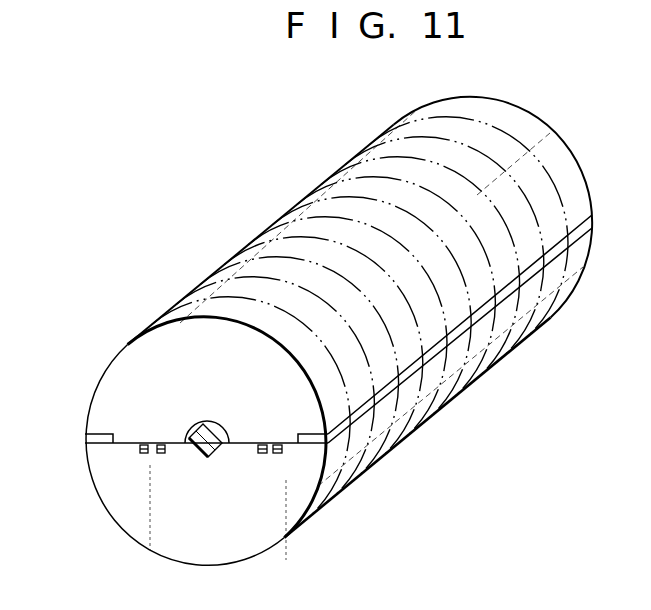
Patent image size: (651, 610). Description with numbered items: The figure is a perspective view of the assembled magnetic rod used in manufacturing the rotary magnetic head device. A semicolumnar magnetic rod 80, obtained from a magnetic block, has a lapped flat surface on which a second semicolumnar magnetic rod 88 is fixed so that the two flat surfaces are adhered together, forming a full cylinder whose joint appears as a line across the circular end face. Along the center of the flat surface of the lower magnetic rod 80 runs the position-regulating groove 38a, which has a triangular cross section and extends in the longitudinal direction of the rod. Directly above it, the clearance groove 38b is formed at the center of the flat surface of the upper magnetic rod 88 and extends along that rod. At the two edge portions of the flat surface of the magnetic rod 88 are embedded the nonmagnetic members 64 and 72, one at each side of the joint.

The semicolumnar magnetic rod 80 is at (253, 535).
The semicolumnar magnetic rod 88 is at (139, 360).
The nonmagnetic member 72 is at (92, 443).
The nonmagnetic member 64 is at (312, 444).
The clearance groove 38b is at (213, 421).
The position-regulating groove 38a is at (212, 457).